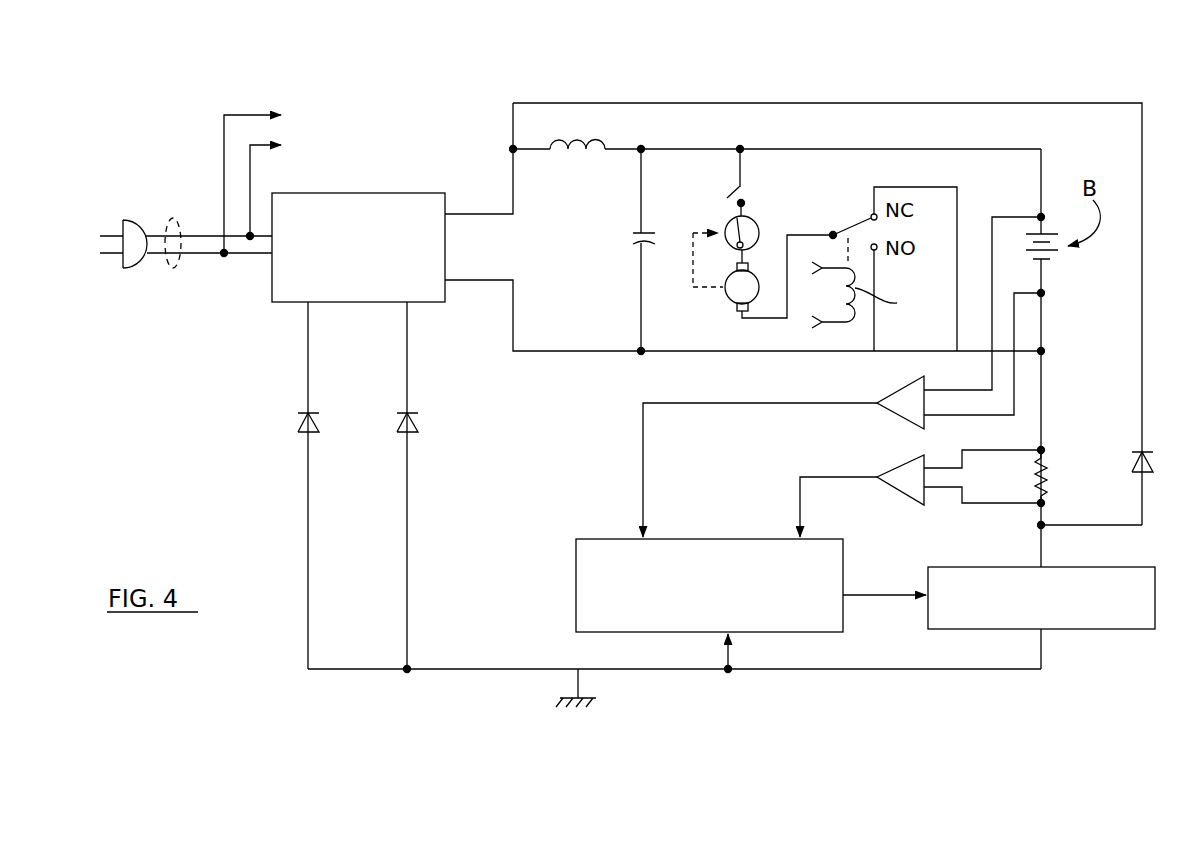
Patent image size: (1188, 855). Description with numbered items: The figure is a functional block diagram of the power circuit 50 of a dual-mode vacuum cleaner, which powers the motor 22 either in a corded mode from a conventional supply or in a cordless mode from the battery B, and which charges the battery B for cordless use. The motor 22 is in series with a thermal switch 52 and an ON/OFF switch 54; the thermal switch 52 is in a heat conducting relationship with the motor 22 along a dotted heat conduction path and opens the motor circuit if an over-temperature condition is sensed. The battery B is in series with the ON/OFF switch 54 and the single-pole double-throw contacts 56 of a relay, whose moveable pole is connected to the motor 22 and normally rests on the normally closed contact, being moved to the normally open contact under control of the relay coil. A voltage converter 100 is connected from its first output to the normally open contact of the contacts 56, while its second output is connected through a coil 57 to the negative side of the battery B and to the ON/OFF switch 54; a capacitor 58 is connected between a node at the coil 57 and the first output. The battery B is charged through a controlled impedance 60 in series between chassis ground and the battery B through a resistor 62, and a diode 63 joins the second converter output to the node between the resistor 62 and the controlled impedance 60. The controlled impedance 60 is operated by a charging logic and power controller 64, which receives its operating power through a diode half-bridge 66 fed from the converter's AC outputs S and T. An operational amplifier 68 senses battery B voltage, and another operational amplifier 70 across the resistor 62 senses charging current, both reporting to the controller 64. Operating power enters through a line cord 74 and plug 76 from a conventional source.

The power circuit 50 is at (186, 131).
The voltage converter 100 is at (415, 191).
The plug 76 is at (137, 270).
The line cord 74 is at (178, 270).
The coil 57 is at (571, 146).
The capacitor 58 is at (633, 229).
The ON/OFF switch 54 is at (735, 189).
The thermal switch 52 is at (758, 228).
The single-pole double-throw contacts 56 is at (844, 217).
The motor 22 is at (726, 299).
The operational amplifier 68 is at (904, 396).
The operational amplifier 70 is at (905, 471).
The resistor 62 is at (1047, 473).
The diode 63 is at (1158, 458).
The charging logic and power controller 64 is at (847, 581).
The controlled impedance 60 is at (1110, 630).
The diode half-bridge 66 is at (261, 450).